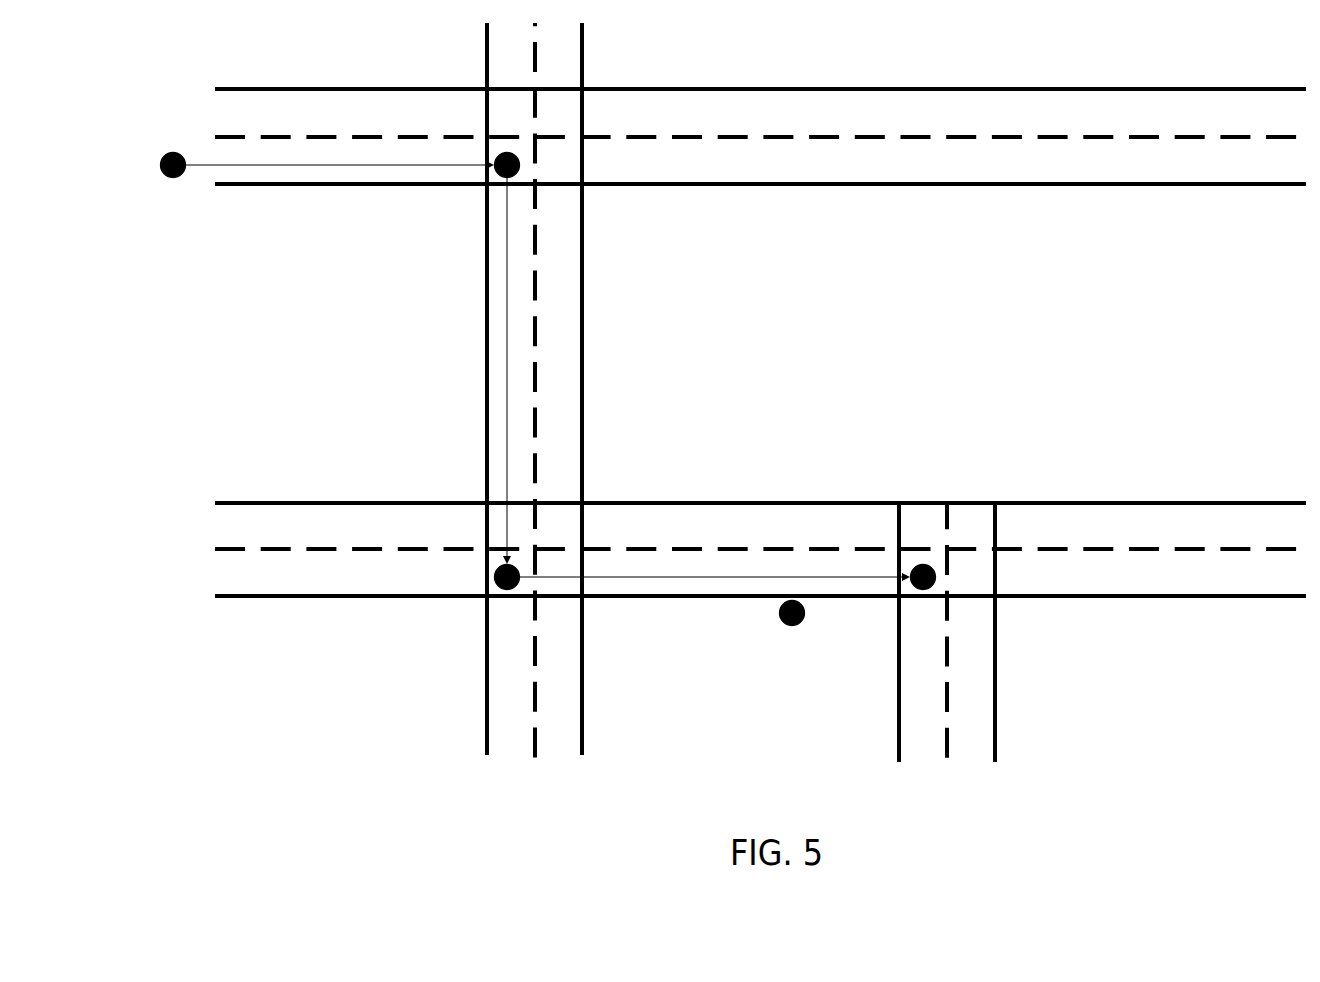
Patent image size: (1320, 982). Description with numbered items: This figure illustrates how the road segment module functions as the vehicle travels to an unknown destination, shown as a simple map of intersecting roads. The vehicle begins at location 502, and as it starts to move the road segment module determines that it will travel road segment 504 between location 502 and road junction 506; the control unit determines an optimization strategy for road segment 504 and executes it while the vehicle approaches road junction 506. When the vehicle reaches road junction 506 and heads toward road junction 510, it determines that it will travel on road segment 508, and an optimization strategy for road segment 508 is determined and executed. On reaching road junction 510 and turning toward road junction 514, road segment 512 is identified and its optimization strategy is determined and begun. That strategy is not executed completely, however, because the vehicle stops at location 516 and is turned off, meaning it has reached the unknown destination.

The location 502 is at (172, 152).
The road segment 504 is at (340, 158).
The road junction 506 is at (507, 152).
The road segment 508 is at (514, 371).
The road junction 510 is at (509, 589).
The road segment 512 is at (715, 569).
The road junction 514 is at (921, 565).
The location 516 is at (793, 626).